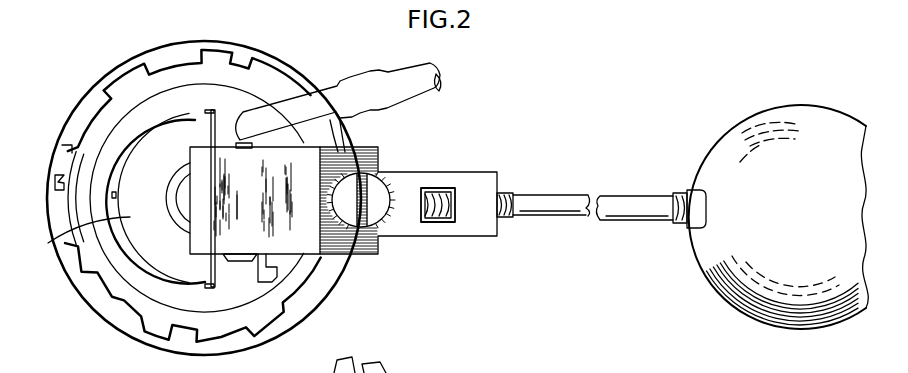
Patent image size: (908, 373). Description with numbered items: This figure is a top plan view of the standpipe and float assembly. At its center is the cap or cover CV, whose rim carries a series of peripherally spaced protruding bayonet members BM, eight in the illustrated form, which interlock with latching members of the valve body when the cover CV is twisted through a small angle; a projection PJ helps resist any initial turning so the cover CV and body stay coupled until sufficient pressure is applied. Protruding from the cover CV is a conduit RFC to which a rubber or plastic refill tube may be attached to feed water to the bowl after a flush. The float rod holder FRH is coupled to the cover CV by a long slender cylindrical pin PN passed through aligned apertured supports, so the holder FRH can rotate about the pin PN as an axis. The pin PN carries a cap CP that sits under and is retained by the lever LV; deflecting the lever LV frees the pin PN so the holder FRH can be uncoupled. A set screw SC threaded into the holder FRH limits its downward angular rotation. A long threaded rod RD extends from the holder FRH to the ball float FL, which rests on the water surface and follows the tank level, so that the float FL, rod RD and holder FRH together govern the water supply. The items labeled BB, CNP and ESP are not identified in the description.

The bezel band BB is at (176, 44).
The bayonet members BM is at (138, 75).
The cap or cover CV is at (103, 88).
The projection PJ is at (58, 187).
The cam plate CNP is at (80, 250).
The pin PN is at (240, 140).
The protruding conduit RFC is at (325, 90).
The set screw SC is at (378, 192).
The float rod holder FRH is at (478, 190).
The rod RD is at (578, 206).
The float FL is at (758, 302).
The lever LV is at (275, 280).
The cap CP is at (242, 262).
The spring ESP is at (291, 368).